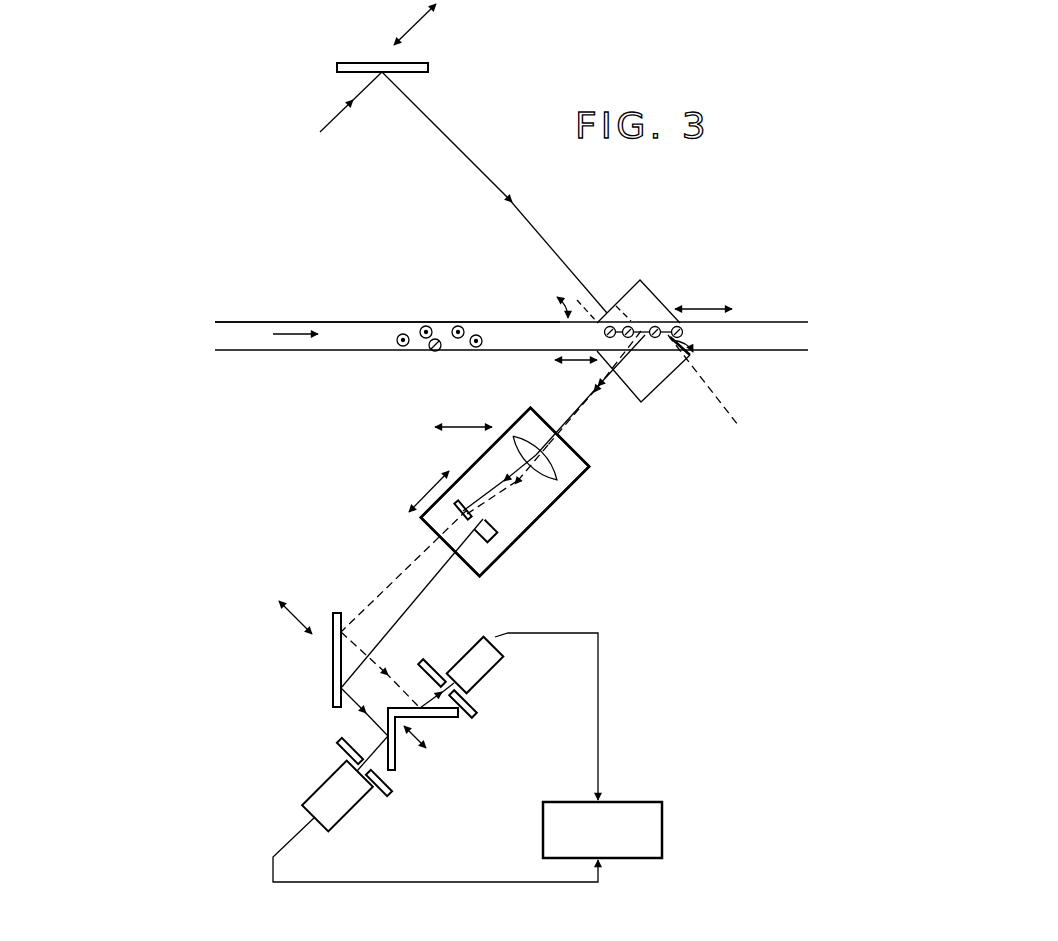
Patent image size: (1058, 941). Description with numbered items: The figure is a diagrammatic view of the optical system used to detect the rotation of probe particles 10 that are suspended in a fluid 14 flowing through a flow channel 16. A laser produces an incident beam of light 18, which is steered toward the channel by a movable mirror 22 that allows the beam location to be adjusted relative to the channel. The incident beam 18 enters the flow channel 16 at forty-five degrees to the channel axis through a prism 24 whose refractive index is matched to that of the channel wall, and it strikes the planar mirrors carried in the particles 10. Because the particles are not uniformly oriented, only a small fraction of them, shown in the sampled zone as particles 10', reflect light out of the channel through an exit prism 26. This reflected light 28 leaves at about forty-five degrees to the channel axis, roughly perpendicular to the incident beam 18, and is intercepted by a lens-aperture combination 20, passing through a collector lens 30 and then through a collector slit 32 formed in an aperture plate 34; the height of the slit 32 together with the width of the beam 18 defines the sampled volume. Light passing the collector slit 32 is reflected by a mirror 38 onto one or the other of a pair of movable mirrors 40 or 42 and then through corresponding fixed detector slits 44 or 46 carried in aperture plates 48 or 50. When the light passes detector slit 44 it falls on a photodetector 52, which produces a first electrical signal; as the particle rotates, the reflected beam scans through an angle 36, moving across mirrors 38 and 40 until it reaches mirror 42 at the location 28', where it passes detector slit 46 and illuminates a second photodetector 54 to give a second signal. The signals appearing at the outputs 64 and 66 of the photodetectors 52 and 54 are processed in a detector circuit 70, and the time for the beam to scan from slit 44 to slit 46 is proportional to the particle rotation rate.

The particles 10 is at (439, 361).
The particle in measuring zone 10' is at (611, 360).
The fluid 14 is at (357, 340).
The flow channel 16 is at (372, 322).
The incident beam of light 18 is at (560, 250).
The lens-aperture combination 20 is at (470, 461).
The movable mirror 22 is at (418, 63).
The prism 24 is at (647, 305).
The exit prism 26 is at (658, 390).
The reflected light 28 is at (493, 553).
The reflected light location 28' is at (497, 519).
The collector lens 30 is at (560, 473).
The collector slit 32 is at (480, 524).
The aperture plate 34 is at (497, 535).
The angle 36 is at (568, 427).
The mirror 38 is at (330, 670).
The movable mirror 40 is at (397, 760).
The movable mirror 42 is at (452, 722).
The fixed detector slit 44 is at (368, 765).
The fixed detector slit 46 is at (435, 668).
The aperture plate 48 is at (337, 748).
The aperture plate 50 is at (474, 706).
The photodetector 52 is at (313, 800).
The photodetector 54 is at (492, 658).
The output 64 is at (283, 847).
The output 66 is at (558, 608).
The detector circuit 70 is at (651, 810).